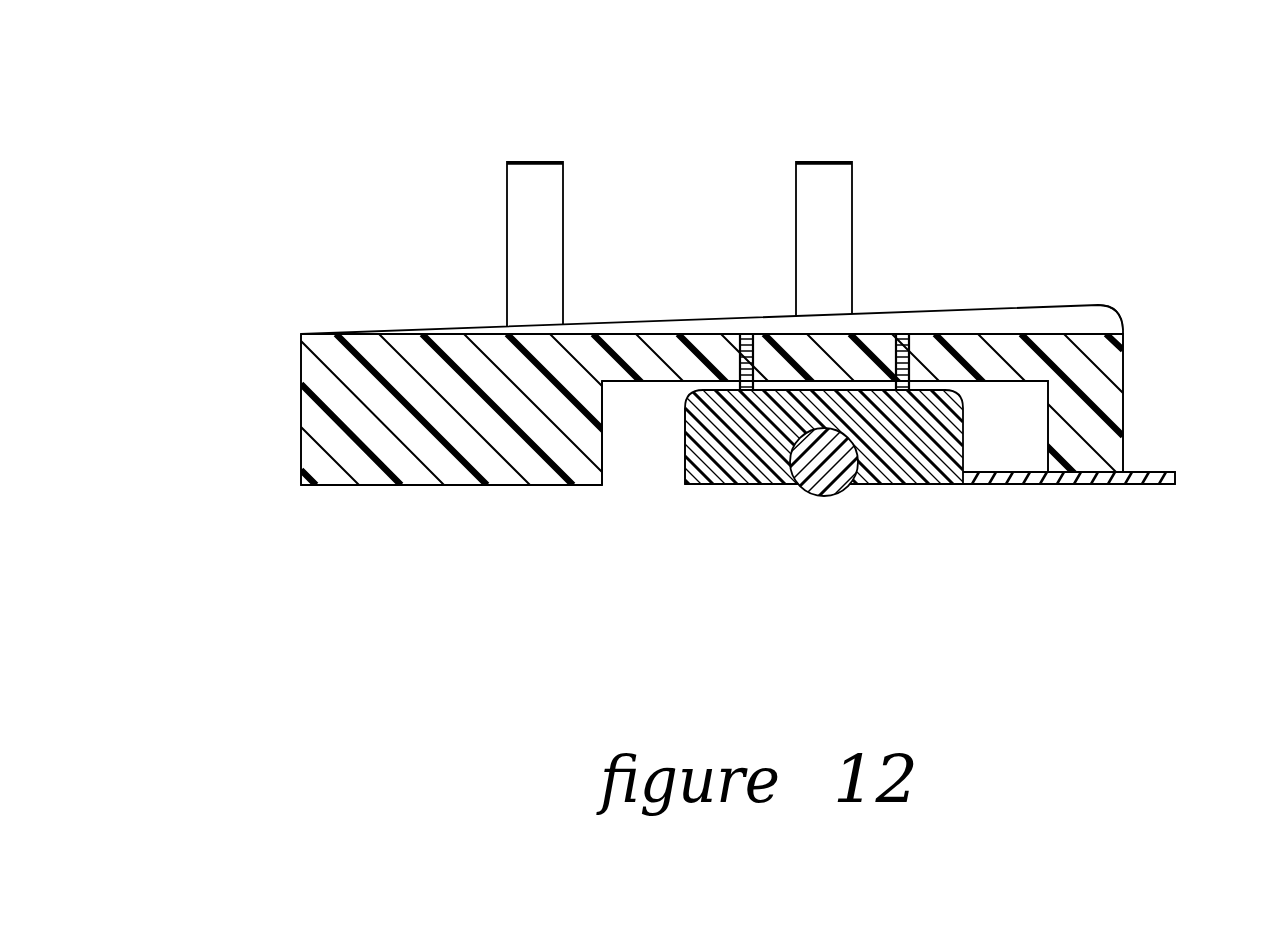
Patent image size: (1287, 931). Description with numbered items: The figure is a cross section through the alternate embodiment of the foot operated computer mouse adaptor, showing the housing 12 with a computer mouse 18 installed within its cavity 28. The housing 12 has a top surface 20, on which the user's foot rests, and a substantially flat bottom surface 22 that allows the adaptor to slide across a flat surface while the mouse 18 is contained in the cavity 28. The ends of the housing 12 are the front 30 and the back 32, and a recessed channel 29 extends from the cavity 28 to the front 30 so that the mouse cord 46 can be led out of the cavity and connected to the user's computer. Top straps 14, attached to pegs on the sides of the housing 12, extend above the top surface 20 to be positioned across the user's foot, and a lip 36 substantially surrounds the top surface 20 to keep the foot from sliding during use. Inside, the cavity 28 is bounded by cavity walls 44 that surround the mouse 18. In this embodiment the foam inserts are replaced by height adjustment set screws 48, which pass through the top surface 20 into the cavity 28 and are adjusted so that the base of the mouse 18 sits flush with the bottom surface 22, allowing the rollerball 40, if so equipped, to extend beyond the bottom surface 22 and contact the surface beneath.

The housing 12 is at (555, 485).
The top straps 14 is at (520, 212).
The computer mouse 18 is at (921, 467).
The top surface 20 is at (1037, 334).
The bottom surface 22 is at (457, 485).
The cavity 28 is at (652, 463).
The recessed channel 29 is at (1090, 475).
The front 30 is at (1123, 385).
The back 32 is at (300, 410).
The lip 36 is at (1123, 318).
The rollerball 40 is at (827, 495).
The cavity walls 44 is at (603, 460).
The mouse cord 46 is at (1145, 483).
The height adjustment set screw 48 is at (728, 318).